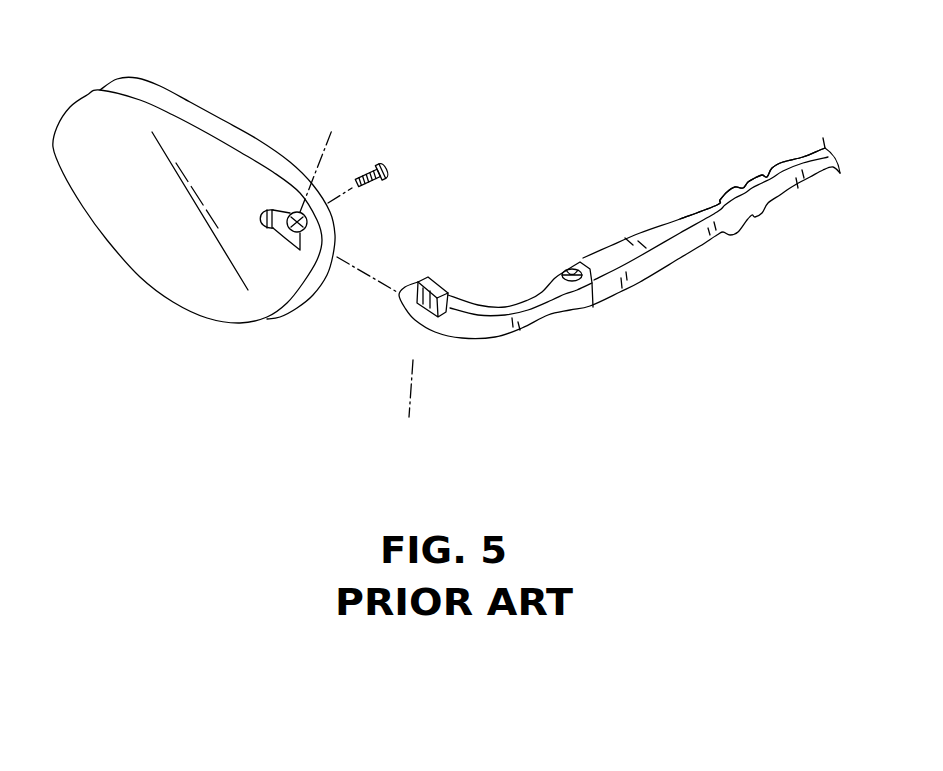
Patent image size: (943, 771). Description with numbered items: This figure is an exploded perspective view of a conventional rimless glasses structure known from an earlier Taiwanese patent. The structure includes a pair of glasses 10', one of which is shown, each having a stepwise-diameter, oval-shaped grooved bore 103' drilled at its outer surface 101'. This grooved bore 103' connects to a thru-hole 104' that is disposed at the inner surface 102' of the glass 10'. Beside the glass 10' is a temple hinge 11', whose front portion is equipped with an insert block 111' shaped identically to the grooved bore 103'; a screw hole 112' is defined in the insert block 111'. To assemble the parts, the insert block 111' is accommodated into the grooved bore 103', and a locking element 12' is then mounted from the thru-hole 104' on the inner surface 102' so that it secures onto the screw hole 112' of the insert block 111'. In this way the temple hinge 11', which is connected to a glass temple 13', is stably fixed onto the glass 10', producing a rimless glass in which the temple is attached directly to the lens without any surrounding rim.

The glass 10' is at (217, 179).
The outer surface 101' is at (200, 262).
The inner surface 102' is at (187, 175).
The grooved bore 103' is at (291, 304).
The thru-hole 104' is at (356, 135).
The locking element 12' is at (401, 163).
The temple hinge 11' is at (619, 279).
The insert block 111' is at (415, 249).
The screw hole 112' is at (420, 383).
The glass temple 13' is at (746, 252).